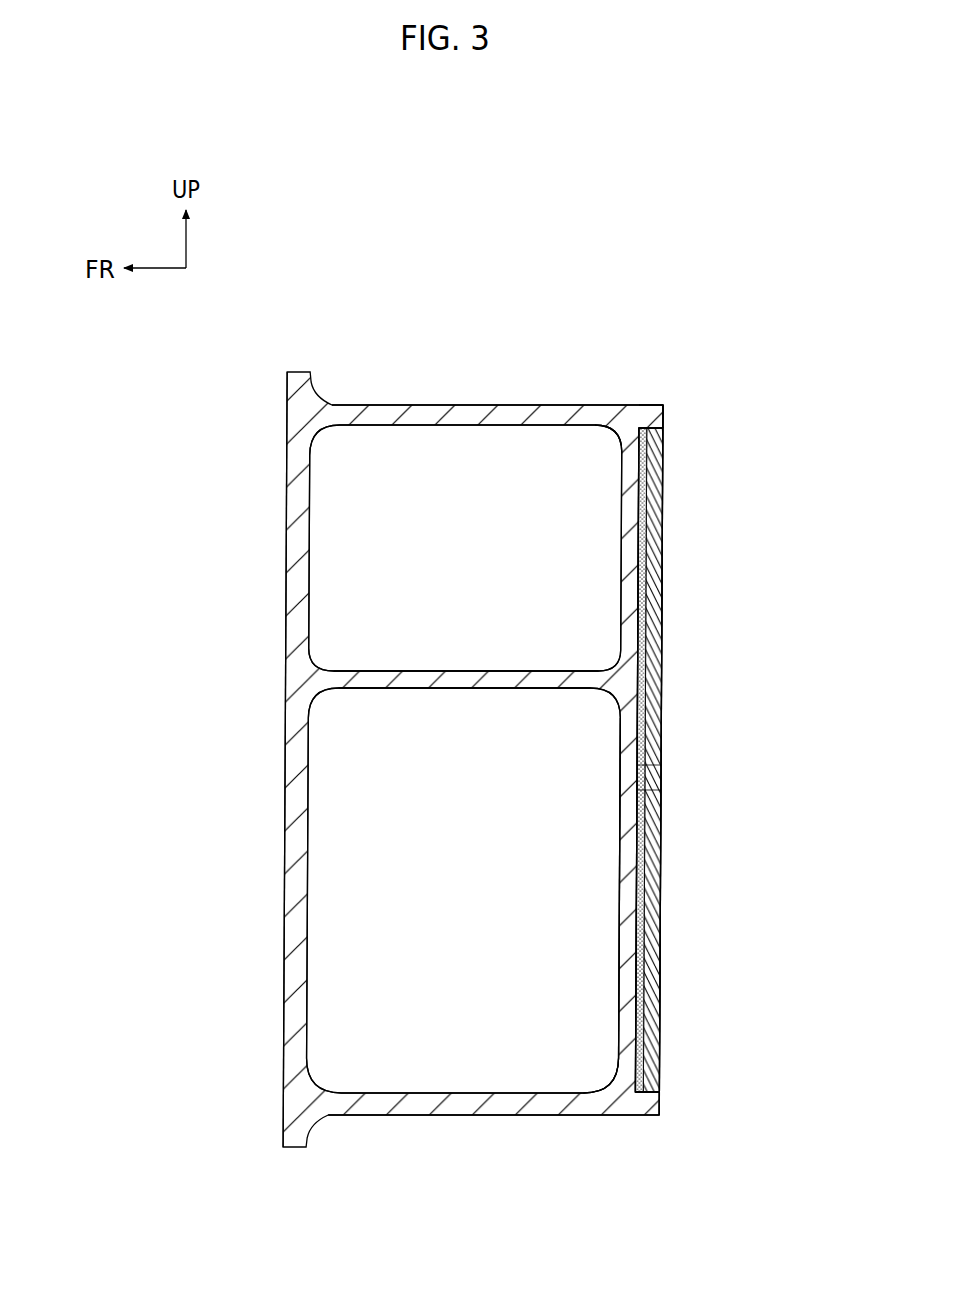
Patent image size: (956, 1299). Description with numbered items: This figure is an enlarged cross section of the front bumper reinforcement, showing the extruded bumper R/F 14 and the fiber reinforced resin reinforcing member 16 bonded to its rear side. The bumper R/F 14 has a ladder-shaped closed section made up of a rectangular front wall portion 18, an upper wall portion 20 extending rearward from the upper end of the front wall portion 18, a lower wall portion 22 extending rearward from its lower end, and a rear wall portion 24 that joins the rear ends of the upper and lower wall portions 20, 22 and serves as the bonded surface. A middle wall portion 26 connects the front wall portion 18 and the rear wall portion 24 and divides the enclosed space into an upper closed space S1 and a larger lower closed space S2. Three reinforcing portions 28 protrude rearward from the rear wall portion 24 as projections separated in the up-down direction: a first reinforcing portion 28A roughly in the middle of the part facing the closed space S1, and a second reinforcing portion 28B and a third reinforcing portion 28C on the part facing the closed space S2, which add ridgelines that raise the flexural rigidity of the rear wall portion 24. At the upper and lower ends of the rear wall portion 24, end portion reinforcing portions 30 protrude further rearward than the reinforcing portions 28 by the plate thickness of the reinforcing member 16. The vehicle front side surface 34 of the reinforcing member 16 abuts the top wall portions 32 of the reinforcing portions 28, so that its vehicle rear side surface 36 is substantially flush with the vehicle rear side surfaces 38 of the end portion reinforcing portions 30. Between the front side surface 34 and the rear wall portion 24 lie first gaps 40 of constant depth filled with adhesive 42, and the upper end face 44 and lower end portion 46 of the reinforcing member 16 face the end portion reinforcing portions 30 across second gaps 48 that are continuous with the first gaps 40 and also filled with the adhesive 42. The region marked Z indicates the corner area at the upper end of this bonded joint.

The bumper R/F 14 is at (288, 363).
The reinforcing member 16 is at (667, 706).
The front wall portion 18 is at (283, 767).
The upper wall portion 20 is at (443, 410).
The lower wall portion 22 is at (443, 1112).
The rear wall portion 24 is at (625, 770).
The middle wall portion 26 is at (485, 675).
The reinforcing portions 28 is at (648, 760).
The first reinforcing portion 28A is at (663, 545).
The second reinforcing portion 28B is at (663, 845).
The third reinforcing portion 28C is at (663, 965).
The end portion reinforcing portions 30 is at (650, 405).
The top wall portions 32 is at (663, 555).
The vehicle front side surface 34 is at (663, 797).
The vehicle rear side surface 36 is at (663, 768).
The vehicle rear side surfaces 38 is at (663, 418).
The first gaps 40 is at (663, 515).
The adhesive 42 is at (663, 480).
The upper end face 44 is at (665, 430).
The lower end portion 46 is at (660, 1090).
The second gap 48 is at (630, 443).
The closed space S1 is at (478, 560).
The closed space S2 is at (478, 882).
The region Z is at (684, 407).